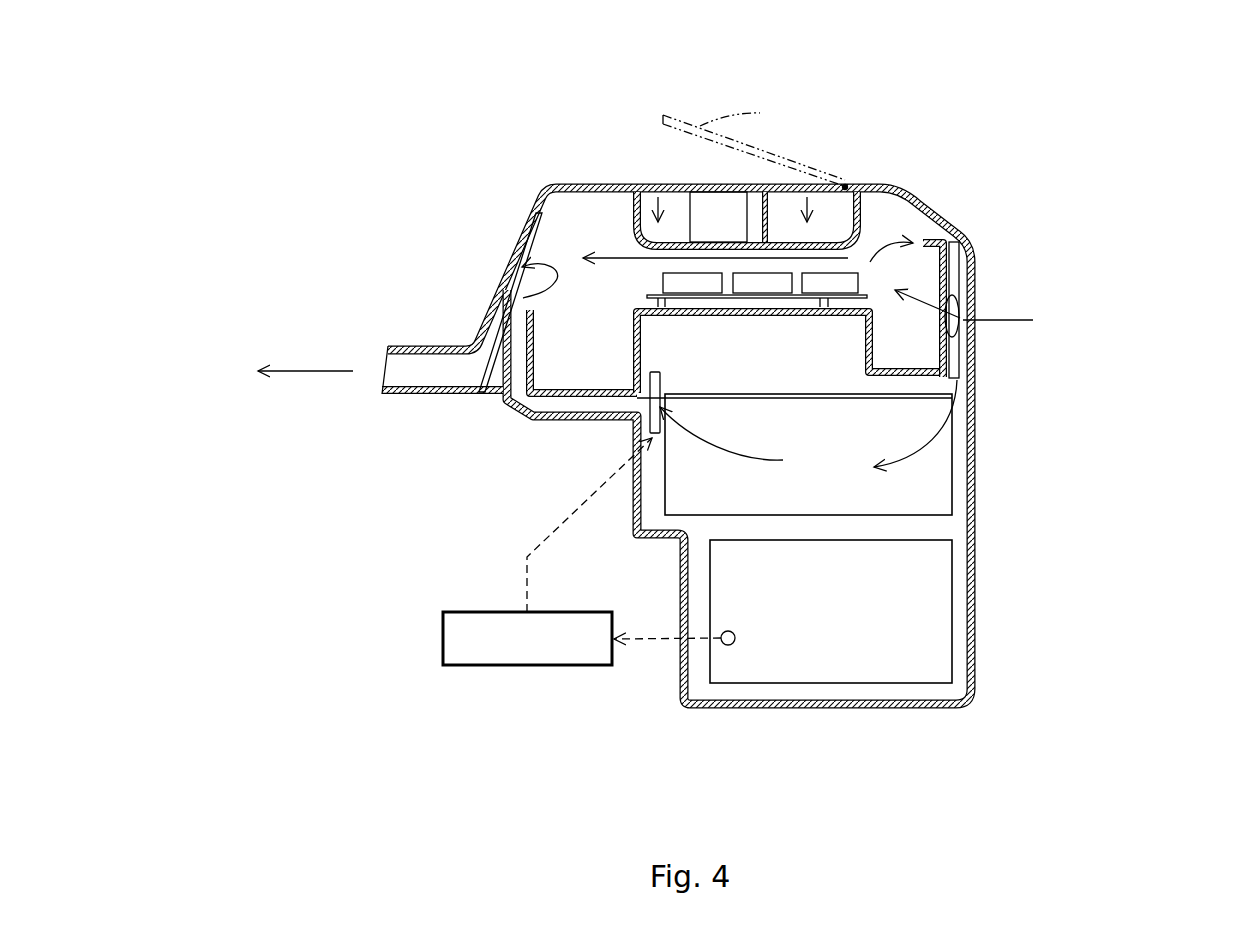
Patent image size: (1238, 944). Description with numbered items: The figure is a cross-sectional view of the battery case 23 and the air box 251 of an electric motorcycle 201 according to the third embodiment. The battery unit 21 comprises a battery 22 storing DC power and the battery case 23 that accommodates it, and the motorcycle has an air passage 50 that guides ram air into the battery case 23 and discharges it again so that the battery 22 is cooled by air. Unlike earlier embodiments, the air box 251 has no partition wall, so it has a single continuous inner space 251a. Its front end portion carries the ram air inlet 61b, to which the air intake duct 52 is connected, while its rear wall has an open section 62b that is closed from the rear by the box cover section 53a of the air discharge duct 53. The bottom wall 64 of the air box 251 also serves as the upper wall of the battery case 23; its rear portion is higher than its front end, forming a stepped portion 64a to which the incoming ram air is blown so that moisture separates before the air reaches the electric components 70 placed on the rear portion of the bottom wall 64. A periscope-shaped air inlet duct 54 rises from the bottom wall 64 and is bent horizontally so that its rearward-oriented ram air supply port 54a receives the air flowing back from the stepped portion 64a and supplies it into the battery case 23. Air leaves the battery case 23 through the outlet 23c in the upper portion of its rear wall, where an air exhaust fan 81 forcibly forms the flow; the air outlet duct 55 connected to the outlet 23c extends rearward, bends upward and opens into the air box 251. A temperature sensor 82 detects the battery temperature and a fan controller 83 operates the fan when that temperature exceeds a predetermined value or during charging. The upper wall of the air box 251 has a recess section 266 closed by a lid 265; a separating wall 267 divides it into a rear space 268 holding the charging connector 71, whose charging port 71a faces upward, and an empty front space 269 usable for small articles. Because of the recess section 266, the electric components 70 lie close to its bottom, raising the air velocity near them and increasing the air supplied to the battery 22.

The electric motorcycle 201 is at (1102, 143).
The battery unit 21 is at (925, 710).
The battery 22 is at (937, 481).
The battery case 23 is at (977, 652).
The outlet 23c is at (637, 385).
The air passage 50 is at (900, 538).
The air intake duct 52 is at (977, 278).
The air discharge duct 53 is at (487, 287).
The box cover section 53a is at (502, 257).
The air inlet duct 54 is at (930, 238).
The ram air supply port 54a is at (892, 208).
The air outlet duct 55 is at (587, 390).
The ram air inlet 61b is at (970, 277).
The open section 62b is at (527, 222).
The bottom wall 64 is at (867, 378).
The stepped portion 64a is at (897, 337).
The electric components 70 is at (818, 285).
The charging connector 71 is at (712, 205).
The charging port 71a is at (762, 200).
The air exhaust fan 81 is at (655, 372).
The temperature sensor 82 is at (733, 647).
The fan controller 83 is at (507, 665).
The air box 251 is at (553, 188).
The inner space 251a is at (900, 197).
The lid 265 is at (732, 197).
The recess section 266 is at (877, 195).
The separating wall 267 is at (790, 200).
The rear space 268 is at (657, 196).
The front space 269 is at (812, 200).